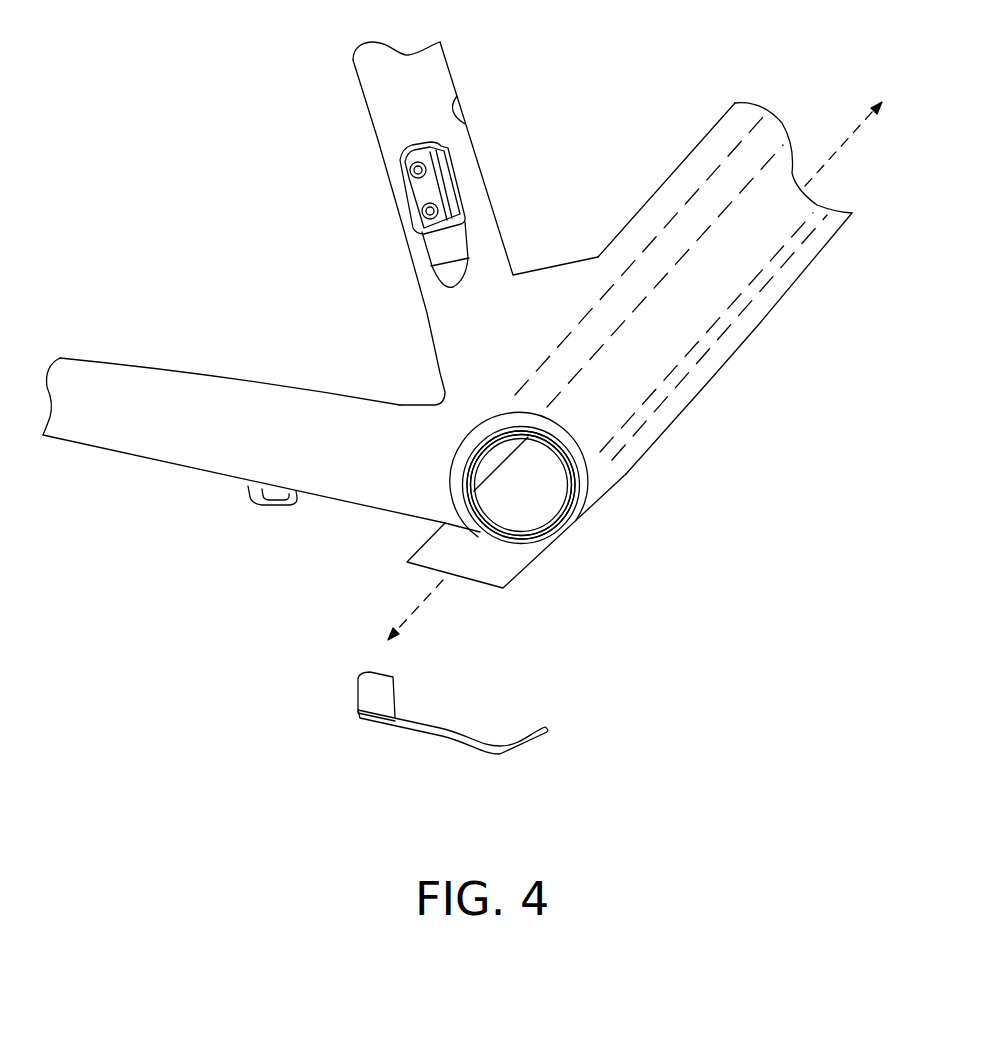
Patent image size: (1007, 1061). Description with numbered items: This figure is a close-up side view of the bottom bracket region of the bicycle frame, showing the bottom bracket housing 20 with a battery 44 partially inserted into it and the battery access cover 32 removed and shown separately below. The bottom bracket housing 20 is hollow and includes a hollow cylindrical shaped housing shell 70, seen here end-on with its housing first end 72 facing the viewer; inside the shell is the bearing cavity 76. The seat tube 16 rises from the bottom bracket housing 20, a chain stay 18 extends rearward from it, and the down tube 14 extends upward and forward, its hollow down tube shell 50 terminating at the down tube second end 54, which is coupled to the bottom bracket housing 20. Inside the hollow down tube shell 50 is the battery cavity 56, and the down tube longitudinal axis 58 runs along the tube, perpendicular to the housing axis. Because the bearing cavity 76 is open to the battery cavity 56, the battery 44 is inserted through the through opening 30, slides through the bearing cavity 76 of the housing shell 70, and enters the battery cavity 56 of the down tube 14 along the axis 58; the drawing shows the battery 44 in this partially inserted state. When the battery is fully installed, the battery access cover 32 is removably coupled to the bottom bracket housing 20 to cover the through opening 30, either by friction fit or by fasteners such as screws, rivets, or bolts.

The down tube 14 is at (756, 358).
The seat tube 16 is at (432, 82).
The chain stays 18 is at (197, 393).
The bottom bracket housing 20 is at (451, 421).
The through opening 30 is at (560, 549).
The battery access cover 32 is at (430, 733).
The battery 44 is at (430, 552).
The hollow down tube shell 50 is at (687, 157).
The down tube second end 54 is at (610, 492).
The battery cavity 56 is at (664, 245).
The down tube longitudinal axis 58 is at (830, 155).
The hollow cylindrical shaped housing shell 70 is at (582, 513).
The housing first end 72 is at (584, 468).
The bearing cavity 76 is at (483, 466).